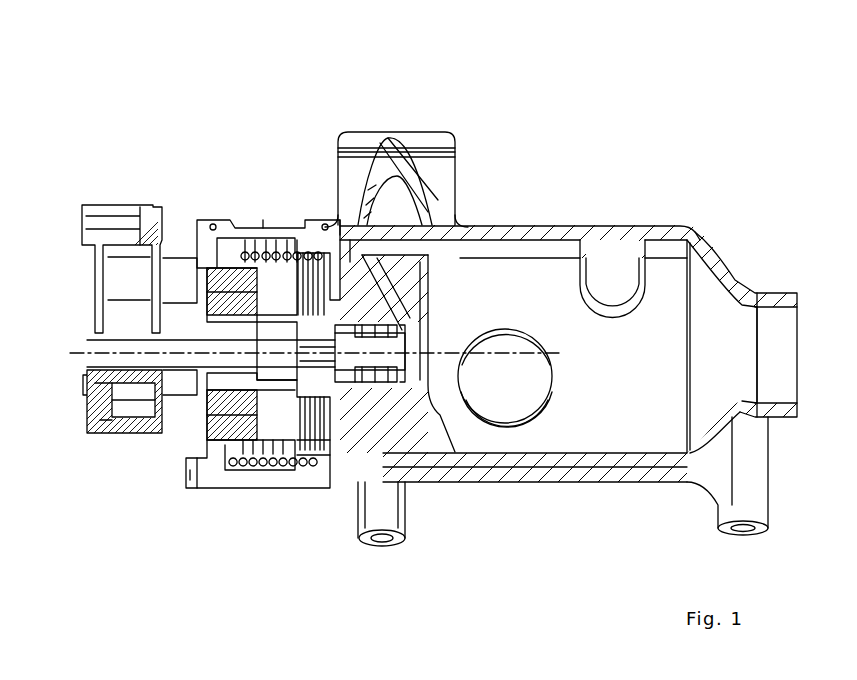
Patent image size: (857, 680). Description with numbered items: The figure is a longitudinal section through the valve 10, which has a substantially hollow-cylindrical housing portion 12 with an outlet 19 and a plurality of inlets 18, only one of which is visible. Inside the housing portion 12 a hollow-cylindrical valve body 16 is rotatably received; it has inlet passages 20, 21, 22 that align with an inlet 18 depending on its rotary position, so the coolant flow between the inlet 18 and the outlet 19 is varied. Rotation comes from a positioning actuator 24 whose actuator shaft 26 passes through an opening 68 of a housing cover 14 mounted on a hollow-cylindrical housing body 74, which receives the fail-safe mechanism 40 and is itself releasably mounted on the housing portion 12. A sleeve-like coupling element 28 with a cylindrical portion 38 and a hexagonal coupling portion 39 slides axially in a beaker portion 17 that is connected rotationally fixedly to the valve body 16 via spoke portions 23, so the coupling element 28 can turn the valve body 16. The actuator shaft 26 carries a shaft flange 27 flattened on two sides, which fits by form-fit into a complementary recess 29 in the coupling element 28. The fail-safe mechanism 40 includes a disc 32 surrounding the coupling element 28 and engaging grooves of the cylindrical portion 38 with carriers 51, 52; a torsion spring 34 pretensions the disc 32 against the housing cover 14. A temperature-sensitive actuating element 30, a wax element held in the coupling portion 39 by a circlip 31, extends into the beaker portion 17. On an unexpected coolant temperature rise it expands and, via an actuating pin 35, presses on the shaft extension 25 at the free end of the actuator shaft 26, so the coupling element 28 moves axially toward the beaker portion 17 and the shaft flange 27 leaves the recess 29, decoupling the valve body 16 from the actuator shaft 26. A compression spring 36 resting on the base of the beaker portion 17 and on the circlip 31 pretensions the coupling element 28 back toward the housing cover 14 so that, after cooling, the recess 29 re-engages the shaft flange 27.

The valve 10 is at (680, 177).
The housing portion 12 is at (680, 225).
The housing cover 14 is at (202, 222).
The valve body 16 is at (547, 272).
The beaker portion 17 is at (403, 397).
The inlet 18 is at (428, 158).
The outlet 19 is at (784, 337).
The inlet passage 20 is at (403, 252).
The inlet passage 21 is at (506, 386).
The inlet passage 22 is at (623, 280).
The spoke portion 23 is at (350, 383).
The positioning actuator 24 is at (112, 207).
The shaft extension 25 is at (336, 372).
The actuator shaft 26 is at (225, 362).
The shaft flange 27 is at (258, 397).
The coupling element 28 is at (301, 295).
The recess 29 is at (273, 400).
The temperature-sensitive actuating element 30 is at (347, 357).
The circlip 31 is at (362, 327).
The disc 32 is at (218, 450).
The torsion spring 34 is at (300, 350).
The actuating pin 35 is at (345, 425).
The compression spring 36 is at (380, 333).
The cylindrical portion 38 is at (235, 305).
The coupling portion 39 is at (340, 378).
The fail-safe mechanism 40 is at (248, 155).
The carrier 51 is at (232, 408).
The carrier 52 is at (273, 305).
The opening 68 is at (205, 364).
The housing body 74 is at (283, 450).